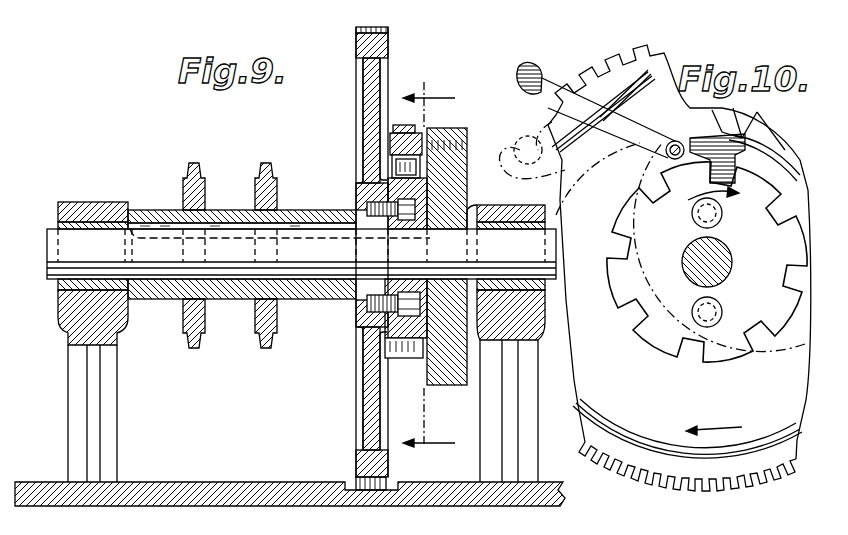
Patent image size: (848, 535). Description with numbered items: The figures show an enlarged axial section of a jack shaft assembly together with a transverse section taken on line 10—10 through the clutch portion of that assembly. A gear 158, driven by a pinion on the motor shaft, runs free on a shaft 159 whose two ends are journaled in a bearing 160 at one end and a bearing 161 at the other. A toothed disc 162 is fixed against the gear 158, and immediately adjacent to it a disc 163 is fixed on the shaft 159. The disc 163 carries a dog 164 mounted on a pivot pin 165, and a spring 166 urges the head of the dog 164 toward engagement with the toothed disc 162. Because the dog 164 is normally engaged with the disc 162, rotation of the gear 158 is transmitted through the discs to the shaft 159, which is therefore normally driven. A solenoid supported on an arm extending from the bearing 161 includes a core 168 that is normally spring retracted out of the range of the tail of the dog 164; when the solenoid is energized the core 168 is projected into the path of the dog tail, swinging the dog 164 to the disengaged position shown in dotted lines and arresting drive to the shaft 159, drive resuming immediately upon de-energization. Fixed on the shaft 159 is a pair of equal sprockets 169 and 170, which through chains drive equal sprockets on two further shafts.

In FIG. 9, the section line 10— 10 is at (429, 267).
In FIG. 9, the gear 158 is at (382, 48).
In FIG. 10, the gear 158 is at (612, 70).
In FIG. 9, the shaft 159 is at (332, 262).
In FIG. 10, the shaft 159 is at (728, 250).
In FIG. 9, the bearing 160 is at (115, 297).
In FIG. 9, the bearing 161 is at (533, 297).
In FIG. 9, the toothed disc 162 is at (405, 360).
In FIG. 10, the toothed disc 162 is at (675, 335).
In FIG. 9, the disc 163 is at (452, 370).
In FIG. 10, the disc 163 is at (630, 355).
In FIG. 9, the dog 164 is at (415, 133).
In FIG. 10, the dog 164 is at (668, 117).
In FIG. 10, the pivot pin 165 is at (670, 152).
In FIG. 10, the spring 166 is at (747, 123).
In FIG. 10, the core 168 is at (527, 142).
In FIG. 9, the sprocket 169 is at (270, 333).
In FIG. 9, the sprocket 170 is at (202, 333).